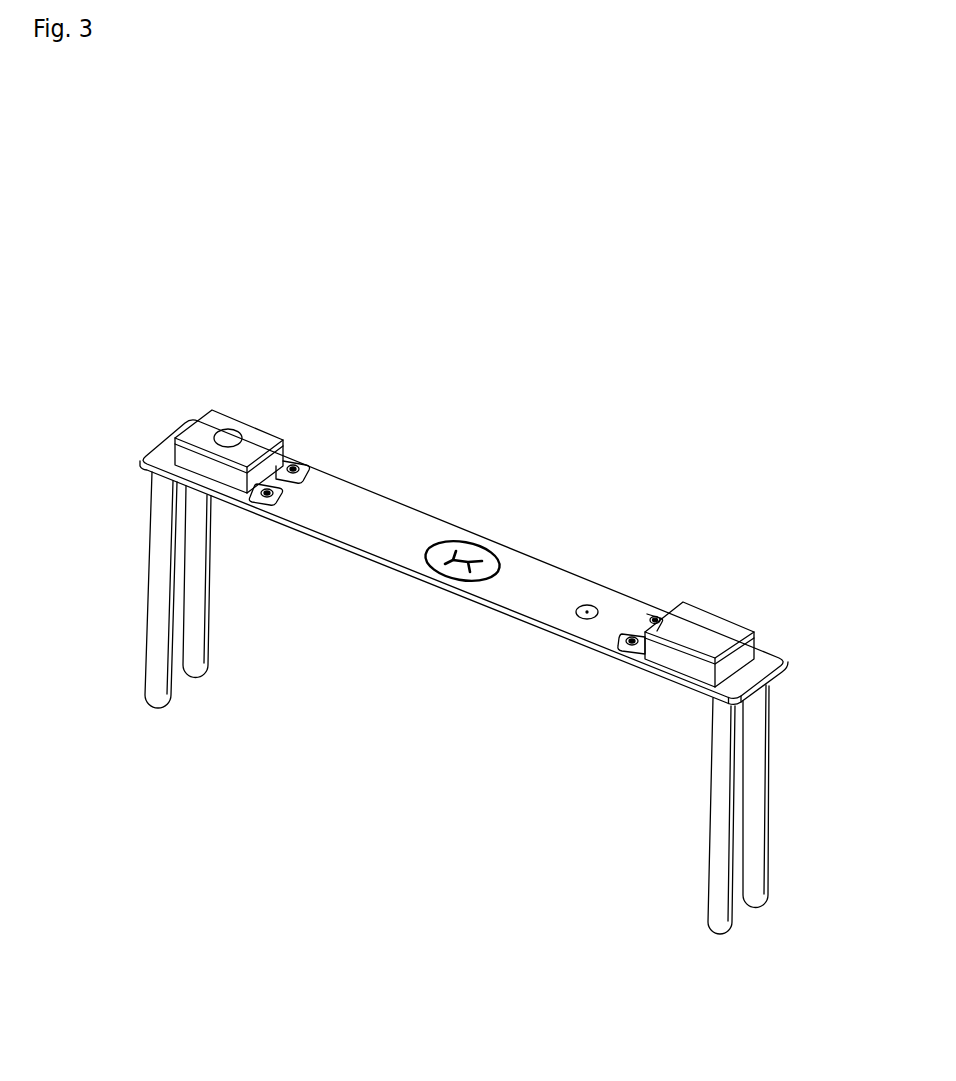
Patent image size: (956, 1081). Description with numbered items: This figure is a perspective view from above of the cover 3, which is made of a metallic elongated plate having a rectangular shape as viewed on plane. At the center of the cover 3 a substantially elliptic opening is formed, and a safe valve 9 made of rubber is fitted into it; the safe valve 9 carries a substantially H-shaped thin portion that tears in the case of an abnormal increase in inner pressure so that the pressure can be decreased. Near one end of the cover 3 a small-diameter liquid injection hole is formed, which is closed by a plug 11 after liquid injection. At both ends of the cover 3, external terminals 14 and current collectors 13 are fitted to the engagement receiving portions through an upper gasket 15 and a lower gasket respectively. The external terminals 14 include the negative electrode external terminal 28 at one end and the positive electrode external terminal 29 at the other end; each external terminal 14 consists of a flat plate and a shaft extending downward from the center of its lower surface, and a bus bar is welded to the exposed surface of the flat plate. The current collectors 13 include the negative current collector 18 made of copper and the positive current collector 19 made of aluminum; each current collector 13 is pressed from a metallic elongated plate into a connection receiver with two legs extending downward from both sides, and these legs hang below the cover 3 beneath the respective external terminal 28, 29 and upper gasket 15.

The cover 3 is at (376, 505).
The safe valve 9 is at (465, 552).
The plug 11 is at (588, 606).
The current collector 13 is at (457, 703).
The external terminal 14 is at (498, 525).
The upper gasket 15 is at (278, 457).
The negative current collector 18 is at (208, 608).
The positive current collector 19 is at (712, 843).
The negative electrode external terminal 28 is at (257, 435).
The positive electrode external terminal 29 is at (710, 623).